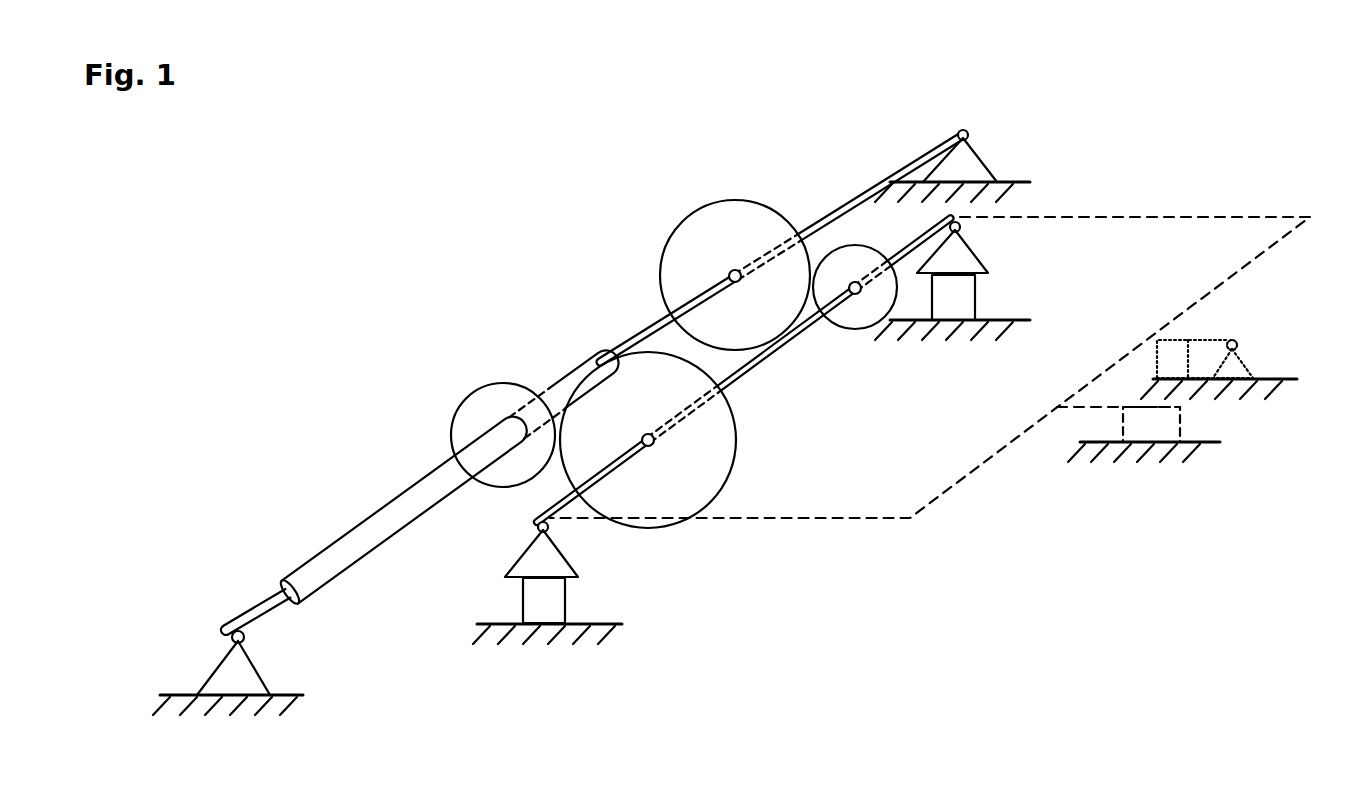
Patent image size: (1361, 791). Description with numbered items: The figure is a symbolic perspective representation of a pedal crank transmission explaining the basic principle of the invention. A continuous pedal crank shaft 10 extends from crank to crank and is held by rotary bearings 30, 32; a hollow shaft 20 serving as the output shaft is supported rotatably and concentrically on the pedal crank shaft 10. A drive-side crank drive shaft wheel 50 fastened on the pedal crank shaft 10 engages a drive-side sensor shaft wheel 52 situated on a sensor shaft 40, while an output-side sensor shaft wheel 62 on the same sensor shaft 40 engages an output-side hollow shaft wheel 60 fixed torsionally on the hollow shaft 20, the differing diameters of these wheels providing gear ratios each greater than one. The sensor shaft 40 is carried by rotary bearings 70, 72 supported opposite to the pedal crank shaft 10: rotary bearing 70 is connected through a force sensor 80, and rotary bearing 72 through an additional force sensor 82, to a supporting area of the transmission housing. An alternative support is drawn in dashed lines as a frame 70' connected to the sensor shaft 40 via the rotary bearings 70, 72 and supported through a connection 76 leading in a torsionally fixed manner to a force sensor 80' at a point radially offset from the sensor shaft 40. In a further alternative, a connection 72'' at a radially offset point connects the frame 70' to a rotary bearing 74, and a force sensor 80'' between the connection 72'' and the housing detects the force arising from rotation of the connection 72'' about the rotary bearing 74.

The pedal crank shaft 10 is at (847, 203).
The hollow shaft 20 is at (360, 525).
The rotary bearing 30 is at (968, 132).
The rotary bearing 32 is at (230, 643).
The sensor shaft 40 is at (758, 362).
The drive-side crank drive shaft wheel 50 is at (695, 238).
The drive-side sensor shaft wheel 52 is at (852, 328).
The output-side hollow shaft wheel 60 is at (472, 403).
The output-side sensor shaft wheel 62 is at (715, 475).
The rotary bearing 70 is at (984, 247).
The frame 70' is at (930, 327).
The rotary bearing 72 is at (516, 549).
The connection 72'' is at (1245, 332).
The rotary bearing 74 is at (1240, 358).
The connection 76 is at (1098, 407).
The force sensor 80 is at (964, 307).
The force sensor 80' is at (1192, 434).
The force sensor 80'' is at (1155, 343).
The force sensor 82 is at (555, 607).